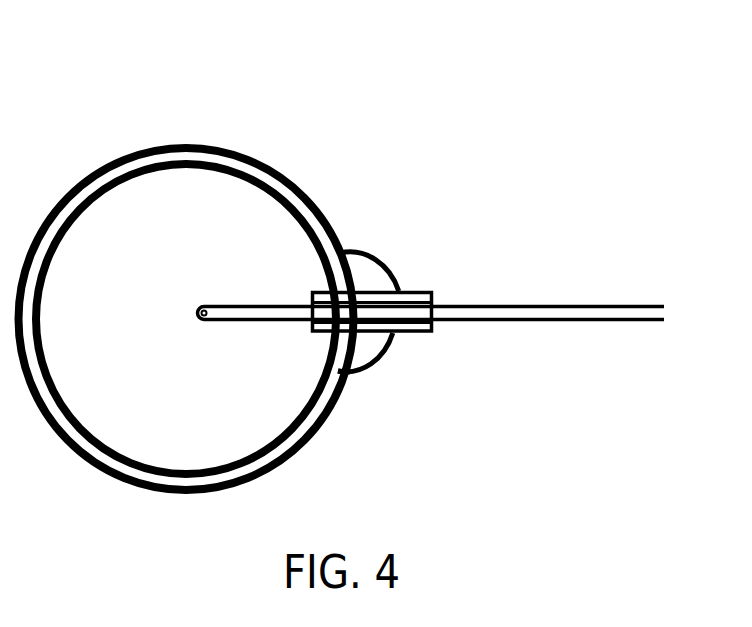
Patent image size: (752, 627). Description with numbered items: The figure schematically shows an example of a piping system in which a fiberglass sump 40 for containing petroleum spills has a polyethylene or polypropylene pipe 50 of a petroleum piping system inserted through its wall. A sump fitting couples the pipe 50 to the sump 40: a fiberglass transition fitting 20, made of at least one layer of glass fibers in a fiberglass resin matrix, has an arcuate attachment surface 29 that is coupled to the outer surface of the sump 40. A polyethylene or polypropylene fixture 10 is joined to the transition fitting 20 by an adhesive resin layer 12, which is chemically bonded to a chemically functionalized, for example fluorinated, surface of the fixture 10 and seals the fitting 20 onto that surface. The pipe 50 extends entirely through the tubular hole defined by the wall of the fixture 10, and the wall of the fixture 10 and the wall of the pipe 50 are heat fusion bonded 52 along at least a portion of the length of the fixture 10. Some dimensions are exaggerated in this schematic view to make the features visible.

The fixture 10 is at (410, 338).
The adhesive resin layer 12 is at (406, 283).
The fiberglass transition fitting 20 is at (379, 246).
The arcuate attachment surface 29 is at (361, 373).
The sump 40 is at (260, 154).
The pipe 50 is at (595, 329).
The heat fusion bond 52 is at (447, 296).